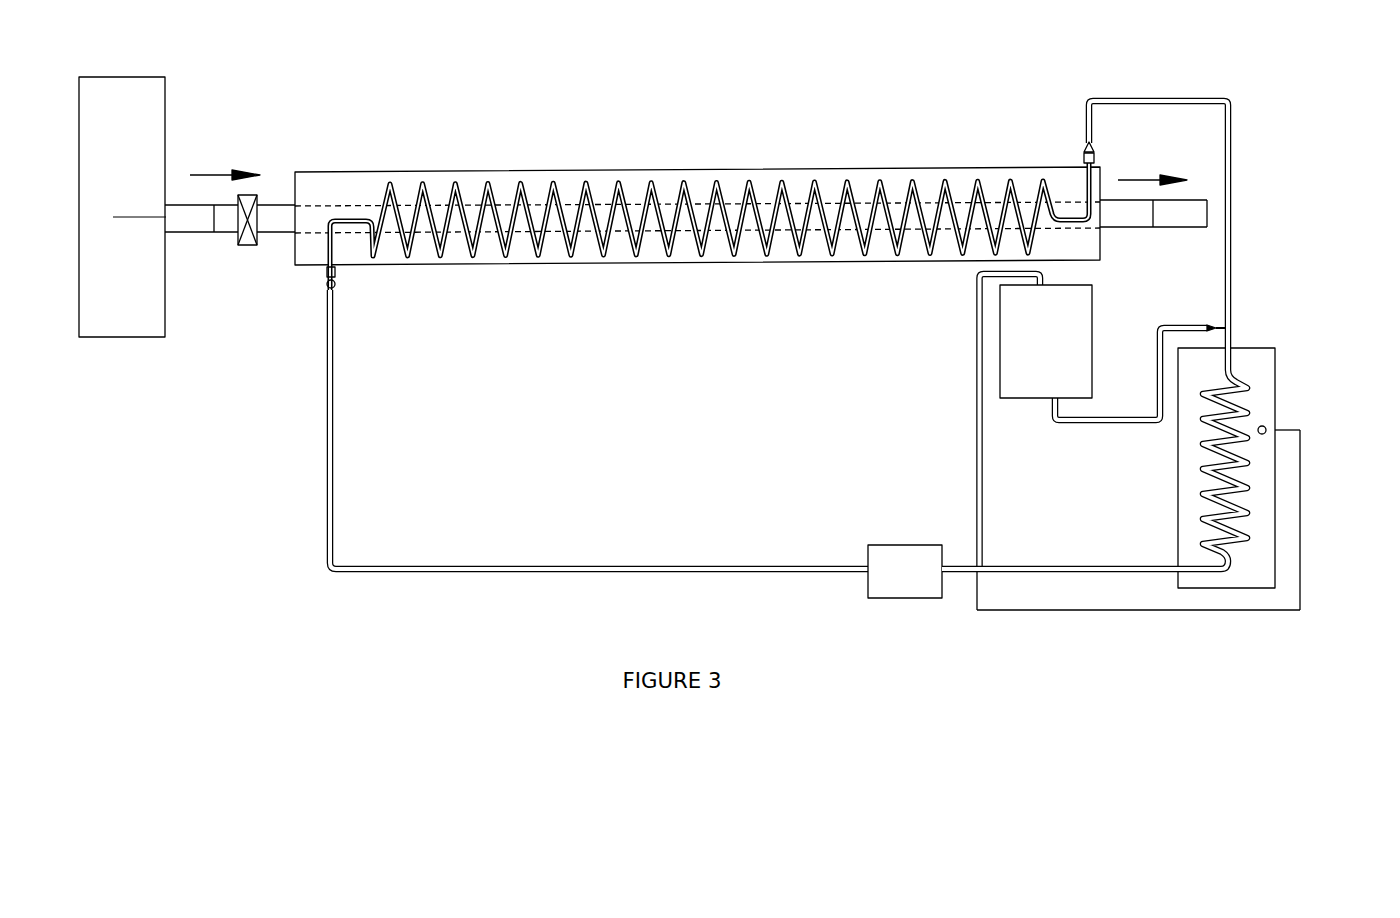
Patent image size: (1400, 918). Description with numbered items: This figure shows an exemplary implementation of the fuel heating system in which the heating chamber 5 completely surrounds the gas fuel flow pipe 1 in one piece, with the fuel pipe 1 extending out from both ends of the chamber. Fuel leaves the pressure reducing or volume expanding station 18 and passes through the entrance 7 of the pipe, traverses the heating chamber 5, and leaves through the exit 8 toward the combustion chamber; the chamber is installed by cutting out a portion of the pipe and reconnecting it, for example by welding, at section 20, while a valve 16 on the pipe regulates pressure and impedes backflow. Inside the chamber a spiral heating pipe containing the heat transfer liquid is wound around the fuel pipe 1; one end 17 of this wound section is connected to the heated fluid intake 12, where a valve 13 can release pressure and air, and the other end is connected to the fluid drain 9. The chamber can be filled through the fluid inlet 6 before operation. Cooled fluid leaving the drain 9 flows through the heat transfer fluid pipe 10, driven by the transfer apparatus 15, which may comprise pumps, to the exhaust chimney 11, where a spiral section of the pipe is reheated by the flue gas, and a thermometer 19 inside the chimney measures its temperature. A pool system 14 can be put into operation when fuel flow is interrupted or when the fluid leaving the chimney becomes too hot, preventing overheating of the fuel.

The gas fuel flow pipe 1 is at (178, 233).
The heating chamber 5 is at (465, 172).
The fluid inlet 6 is at (585, 168).
The entrance 7 is at (230, 172).
The exit 8 is at (1162, 180).
The fluid drain 9 is at (332, 282).
The heat transfer fluid pipe 10 is at (333, 357).
The exhaust chimney 11 is at (1270, 388).
The fluid inlet 12 is at (1085, 157).
The valve 13 is at (1087, 145).
The pool system 14 is at (1002, 363).
The transfer apparatus 15 is at (873, 558).
The valve 16 is at (255, 202).
The end of wound pipe section 17 is at (750, 183).
The pressure reducing or volume expanding station 18 is at (83, 165).
The thermometer 19 is at (1268, 428).
The section 20 is at (267, 233).